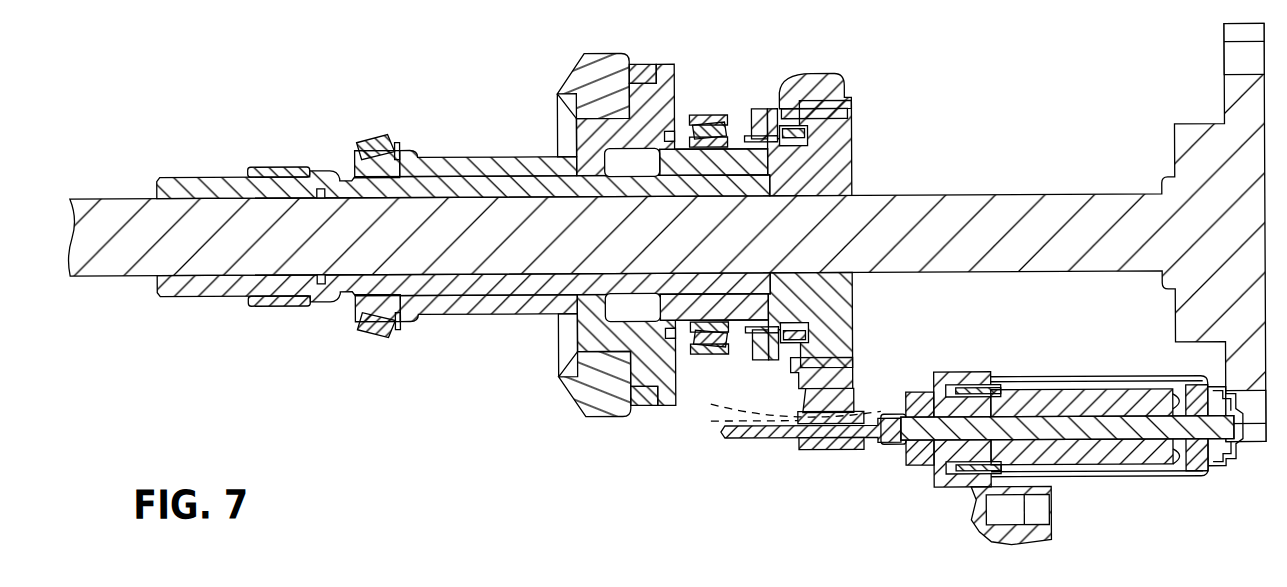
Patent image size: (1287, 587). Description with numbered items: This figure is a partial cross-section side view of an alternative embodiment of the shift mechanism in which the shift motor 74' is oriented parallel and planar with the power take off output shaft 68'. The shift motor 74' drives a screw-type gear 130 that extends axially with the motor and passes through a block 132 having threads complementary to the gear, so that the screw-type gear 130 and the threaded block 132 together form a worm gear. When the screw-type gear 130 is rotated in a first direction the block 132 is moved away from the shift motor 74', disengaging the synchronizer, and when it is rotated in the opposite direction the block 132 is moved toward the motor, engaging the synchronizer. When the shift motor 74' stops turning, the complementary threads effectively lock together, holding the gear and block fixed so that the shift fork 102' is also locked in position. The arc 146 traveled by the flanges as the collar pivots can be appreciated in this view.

The power take off output shaft 68' is at (666, 235).
The shift fork 102' is at (859, 378).
The arc 146 is at (728, 410).
The screw-type gear 130 is at (760, 438).
The block 132 is at (830, 449).
The shift motor 74' is at (1062, 458).